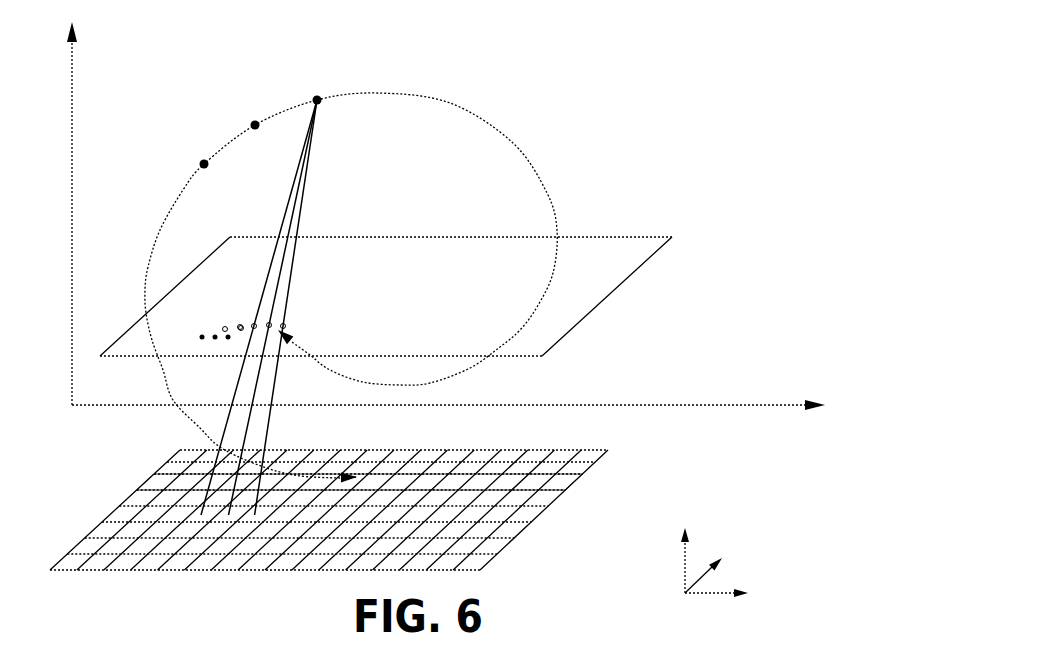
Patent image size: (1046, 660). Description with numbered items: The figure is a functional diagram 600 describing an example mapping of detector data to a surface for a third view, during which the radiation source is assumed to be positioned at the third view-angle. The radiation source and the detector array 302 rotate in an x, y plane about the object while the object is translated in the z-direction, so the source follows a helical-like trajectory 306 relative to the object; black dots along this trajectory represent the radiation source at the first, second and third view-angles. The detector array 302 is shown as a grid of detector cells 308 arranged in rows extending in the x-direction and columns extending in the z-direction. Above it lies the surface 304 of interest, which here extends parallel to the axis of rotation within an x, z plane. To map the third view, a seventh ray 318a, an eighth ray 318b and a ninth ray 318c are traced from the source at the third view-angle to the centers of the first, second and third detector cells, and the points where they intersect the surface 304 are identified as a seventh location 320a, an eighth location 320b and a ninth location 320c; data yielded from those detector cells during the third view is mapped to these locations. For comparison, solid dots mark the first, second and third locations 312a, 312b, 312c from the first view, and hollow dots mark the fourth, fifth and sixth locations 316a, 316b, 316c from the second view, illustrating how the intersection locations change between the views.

The functional diagram 600 is at (658, 42).
The detector array 302 is at (587, 450).
The surface 304 is at (603, 236).
The helical-like trajectory 306 is at (510, 143).
The detector cells 308 is at (138, 500).
The first location 312a is at (202, 337).
The second location 312b is at (215, 337).
The third location 312c is at (228, 337).
The fourth location 316a is at (225, 329).
The fifth location 316b is at (240, 327).
The sixth location 316c is at (241, 330).
The seventh ray 318a is at (290, 194).
The eighth ray 318b is at (303, 176).
The ninth ray 318c is at (303, 196).
The seventh location 320a is at (254, 326).
The eighth location 320b is at (270, 325).
The ninth location 320c is at (284, 325).